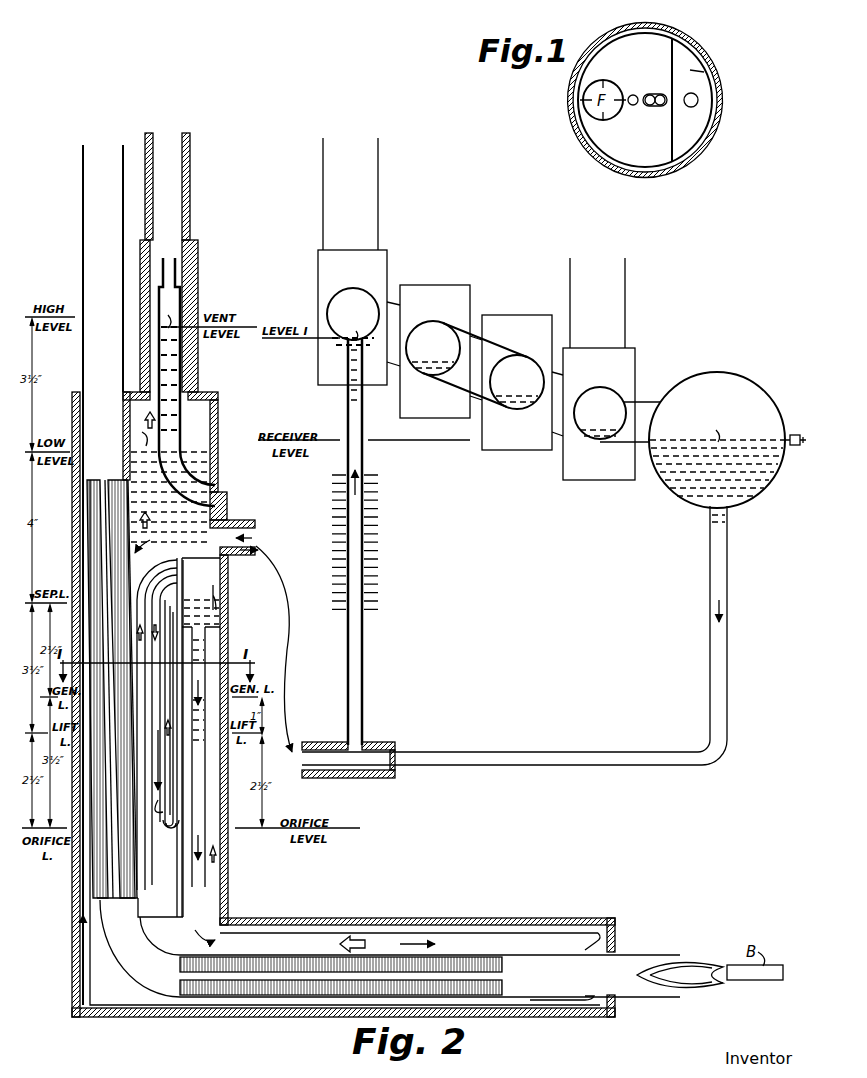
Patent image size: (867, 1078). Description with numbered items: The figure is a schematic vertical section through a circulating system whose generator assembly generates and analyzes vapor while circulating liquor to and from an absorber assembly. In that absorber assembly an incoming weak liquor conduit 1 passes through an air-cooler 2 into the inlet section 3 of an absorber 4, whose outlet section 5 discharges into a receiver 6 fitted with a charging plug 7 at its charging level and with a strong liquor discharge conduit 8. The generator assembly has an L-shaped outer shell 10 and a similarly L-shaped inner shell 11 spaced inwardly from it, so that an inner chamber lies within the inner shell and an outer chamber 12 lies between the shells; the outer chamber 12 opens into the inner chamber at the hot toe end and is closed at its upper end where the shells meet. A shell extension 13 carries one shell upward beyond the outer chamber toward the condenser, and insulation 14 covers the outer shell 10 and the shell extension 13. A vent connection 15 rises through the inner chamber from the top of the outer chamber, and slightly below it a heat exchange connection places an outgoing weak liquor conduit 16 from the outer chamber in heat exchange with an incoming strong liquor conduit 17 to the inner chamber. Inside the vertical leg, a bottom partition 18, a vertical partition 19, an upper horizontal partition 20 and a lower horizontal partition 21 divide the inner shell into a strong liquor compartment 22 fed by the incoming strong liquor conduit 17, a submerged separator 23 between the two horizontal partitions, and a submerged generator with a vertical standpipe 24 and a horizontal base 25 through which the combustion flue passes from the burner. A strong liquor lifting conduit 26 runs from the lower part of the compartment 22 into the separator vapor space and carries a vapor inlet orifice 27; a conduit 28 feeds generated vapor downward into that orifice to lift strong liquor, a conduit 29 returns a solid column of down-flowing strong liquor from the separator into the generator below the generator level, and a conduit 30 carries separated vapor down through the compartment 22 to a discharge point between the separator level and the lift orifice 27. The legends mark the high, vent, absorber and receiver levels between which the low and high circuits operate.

In FIG. 2, the incoming weak liquor conduit 1 is at (362, 666).
In FIG. 2, the air-cooler 2 is at (378, 573).
In FIG. 2, the inlet section 3 is at (358, 291).
In FIG. 2, the absorber 4 is at (523, 306).
In FIG. 2, the outlet section 5 is at (606, 388).
In FIG. 2, the receiver 6 is at (752, 382).
In FIG. 2, the charging plug 7 is at (799, 436).
In FIG. 2, the strong liquor discharge conduit 8 is at (566, 752).
In FIG. 1, the outer shell 10 is at (690, 50).
In FIG. 2, the outer shell 10 is at (290, 926).
In FIG. 1, the inner shell 11 is at (693, 75).
In FIG. 2, the inner shell 11 is at (478, 930).
In FIG. 2, the outer chamber 12 is at (540, 932).
In FIG. 2, the shell extension 13 is at (173, 222).
In FIG. 1, the insulation 14 is at (722, 118).
In FIG. 2, the insulation 14 is at (617, 940).
In FIG. 2, the vent connection 15 is at (178, 443).
In FIG. 2, the outgoing weak liquor conduit 16 is at (257, 527).
In FIG. 2, the incoming strong liquor conduit 17 is at (258, 540).
In FIG. 2, the bottom partition 18 is at (166, 916).
In FIG. 1, the vertical partition 19 is at (671, 57).
In FIG. 2, the vertical partition 19 is at (185, 906).
In FIG. 2, the upper horizontal partition 20 is at (205, 562).
In FIG. 2, the horizontal partition 21 is at (220, 634).
In FIG. 2, the strong liquor compartment 22 is at (170, 531).
In FIG. 2, the submerged separator 23 is at (200, 600).
In FIG. 2, the vertical standpipe 24 is at (222, 778).
In FIG. 2, the horizontal base 25 is at (262, 933).
In FIG. 1, the strong liquor lifting conduit 26 is at (658, 95).
In FIG. 2, the strong liquor lifting conduit 26 is at (148, 779).
In FIG. 2, the vapor inlet orifice 27 is at (162, 826).
In FIG. 1, the conduit 28 is at (660, 106).
In FIG. 2, the conduit 28 is at (172, 828).
In FIG. 1, the conduit 29 is at (691, 107).
In FIG. 2, the conduit 29 is at (203, 757).
In FIG. 1, the conduit 30 is at (633, 105).
In FIG. 2, the conduit 30 is at (156, 576).